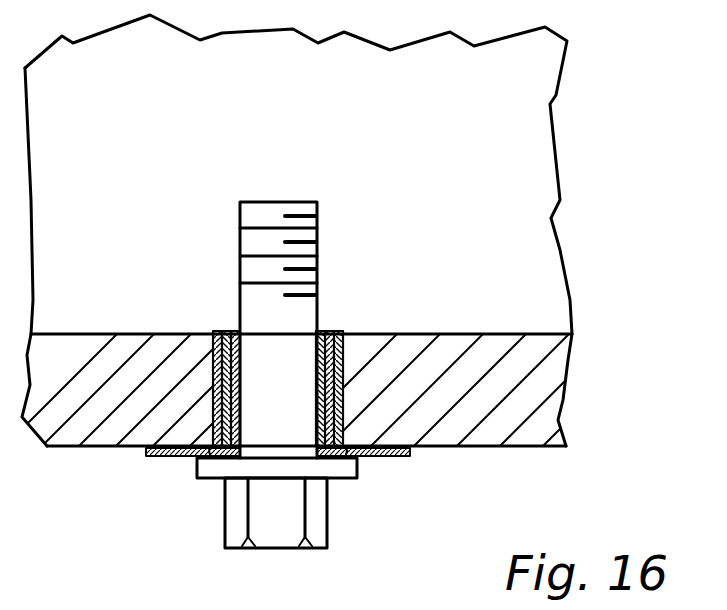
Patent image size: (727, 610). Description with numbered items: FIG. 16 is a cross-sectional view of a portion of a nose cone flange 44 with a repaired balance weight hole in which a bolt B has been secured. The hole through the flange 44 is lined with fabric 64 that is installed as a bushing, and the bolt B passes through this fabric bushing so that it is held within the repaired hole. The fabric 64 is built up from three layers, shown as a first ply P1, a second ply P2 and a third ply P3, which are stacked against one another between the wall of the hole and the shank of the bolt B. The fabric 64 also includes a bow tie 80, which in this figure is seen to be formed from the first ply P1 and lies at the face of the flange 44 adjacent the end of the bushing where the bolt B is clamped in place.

The flange 44 is at (517, 425).
The fabric 64 is at (345, 373).
The first ply P1 is at (322, 333).
The second ply P2 is at (331, 333).
The third ply P3 is at (337, 333).
The bow tie 80 is at (167, 458).
The bolt B is at (280, 537).